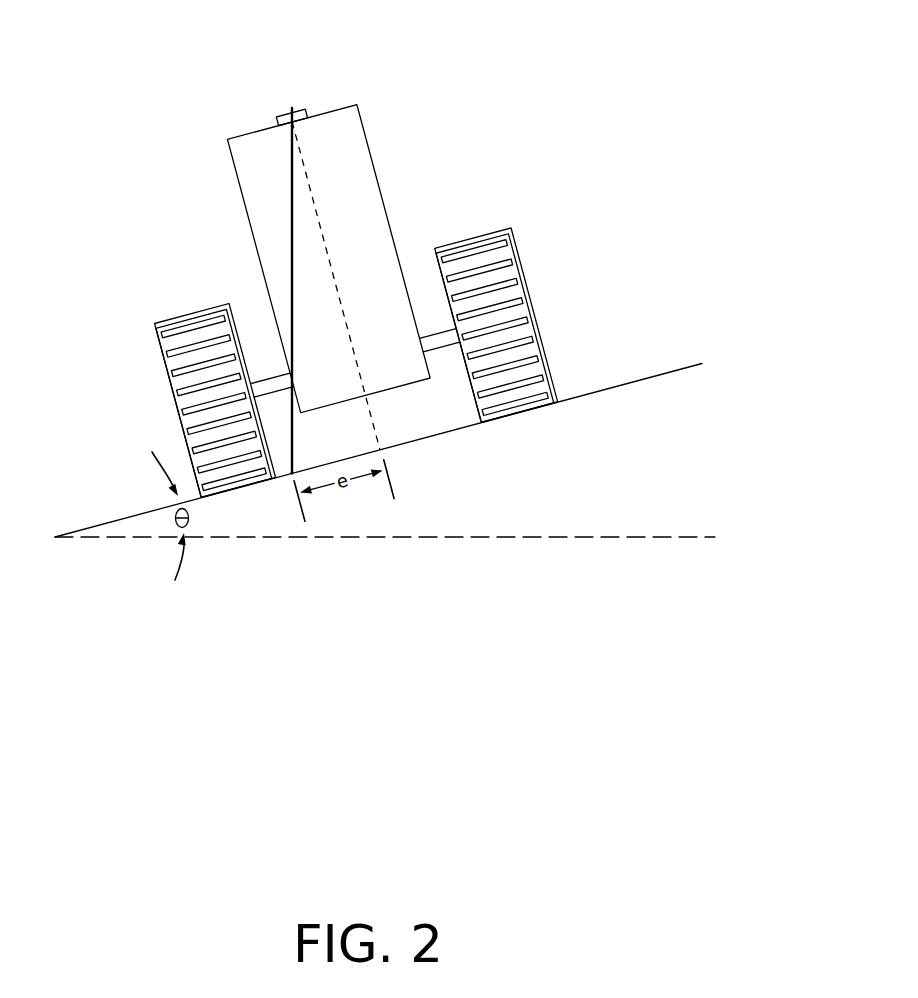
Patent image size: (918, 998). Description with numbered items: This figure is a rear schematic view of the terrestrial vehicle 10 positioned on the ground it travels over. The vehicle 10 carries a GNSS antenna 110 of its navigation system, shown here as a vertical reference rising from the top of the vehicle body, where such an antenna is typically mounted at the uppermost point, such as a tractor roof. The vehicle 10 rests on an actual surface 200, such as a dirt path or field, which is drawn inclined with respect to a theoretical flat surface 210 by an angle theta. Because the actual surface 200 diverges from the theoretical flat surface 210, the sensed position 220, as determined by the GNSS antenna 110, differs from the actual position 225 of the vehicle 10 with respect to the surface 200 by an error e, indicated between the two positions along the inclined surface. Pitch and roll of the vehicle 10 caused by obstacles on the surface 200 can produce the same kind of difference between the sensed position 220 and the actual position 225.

The terrestrial vehicle 10 is at (466, 87).
The global navigation satellite system antenna 110 is at (292, 112).
The surface 200 is at (617, 386).
The theoretical flat surface 210 is at (627, 537).
The sensed position 220 is at (292, 476).
The actual position 225 is at (383, 448).